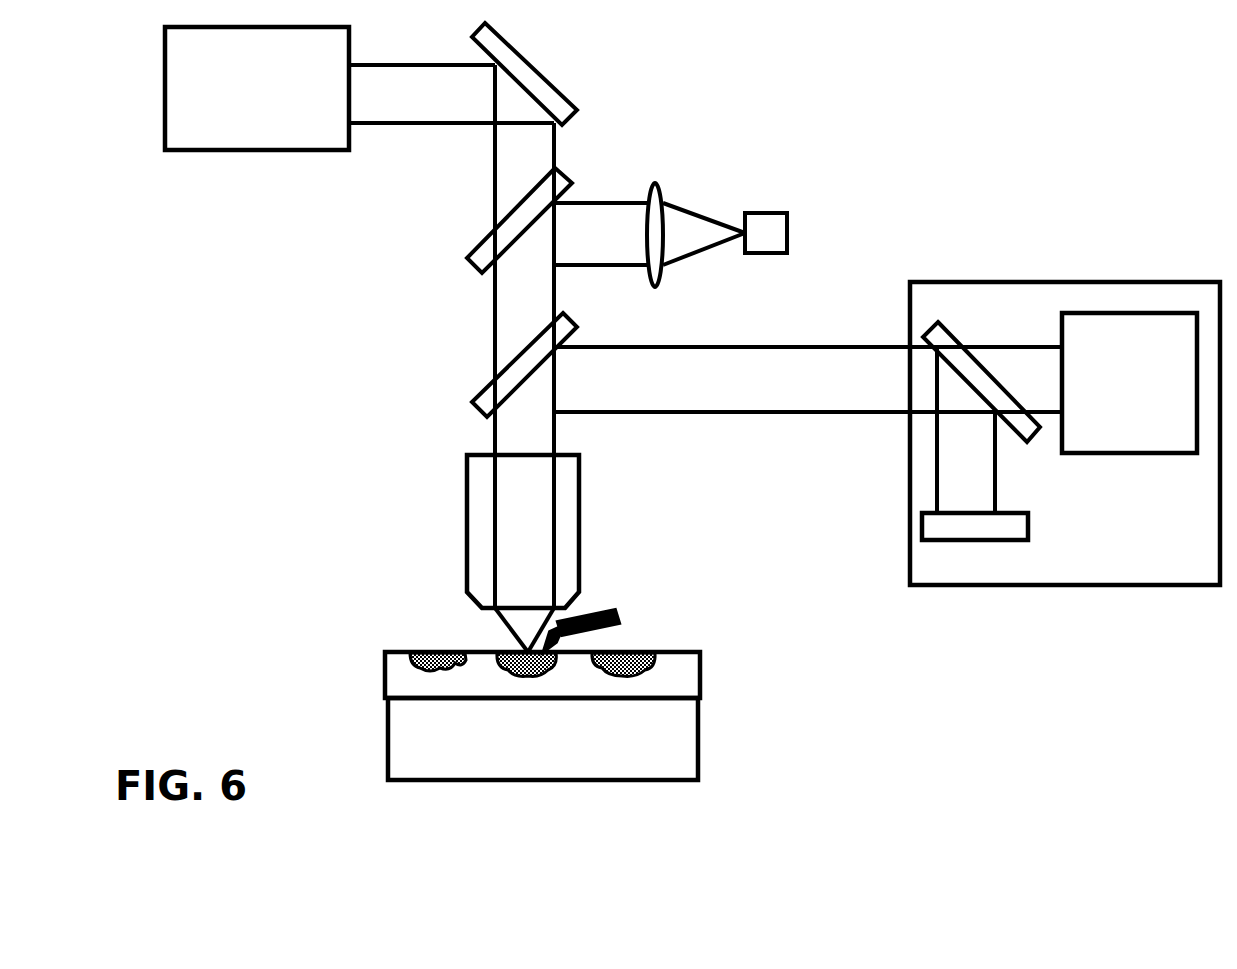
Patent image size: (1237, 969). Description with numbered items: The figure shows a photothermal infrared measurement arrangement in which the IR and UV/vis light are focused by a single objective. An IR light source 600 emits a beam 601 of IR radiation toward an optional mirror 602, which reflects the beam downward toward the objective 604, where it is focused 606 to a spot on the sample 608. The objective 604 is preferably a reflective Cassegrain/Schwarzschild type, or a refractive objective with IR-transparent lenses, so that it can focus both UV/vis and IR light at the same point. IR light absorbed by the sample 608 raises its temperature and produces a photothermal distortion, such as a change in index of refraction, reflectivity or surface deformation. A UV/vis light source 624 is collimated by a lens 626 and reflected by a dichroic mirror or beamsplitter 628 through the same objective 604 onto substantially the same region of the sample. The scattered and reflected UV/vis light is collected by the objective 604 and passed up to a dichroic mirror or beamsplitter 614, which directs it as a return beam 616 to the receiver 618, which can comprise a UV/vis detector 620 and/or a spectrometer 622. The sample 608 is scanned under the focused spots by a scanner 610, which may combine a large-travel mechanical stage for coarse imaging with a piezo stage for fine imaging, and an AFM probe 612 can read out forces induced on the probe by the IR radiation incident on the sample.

The IR light source 600 is at (257, 88).
The beam 601 is at (451, 336).
The mirror 602 is at (531, 74).
The objective 604 is at (497, 531).
The focused spot 606 is at (505, 637).
The sample 608 is at (516, 675).
The scanner 610 is at (543, 739).
The AFM probe 612 is at (610, 617).
The dichroic mirror/beamsplitter 614 is at (497, 365).
The reflected beam 616 is at (808, 379).
The receiver 618 is at (1065, 415).
The UV/vis detector 620 is at (975, 463).
The spectrometer 622 is at (1129, 383).
The UV/vis light source 624 is at (731, 224).
The lens 626 is at (620, 218).
The dichroic mirror or beamsplitter 628 is at (540, 211).